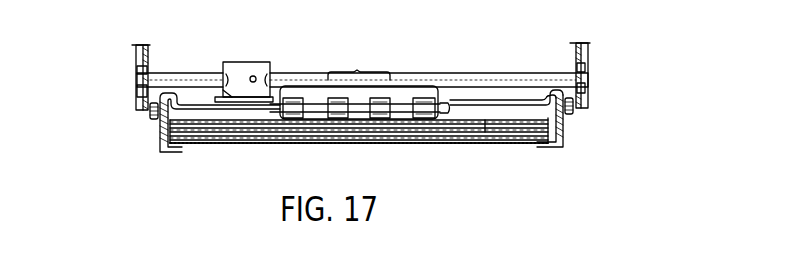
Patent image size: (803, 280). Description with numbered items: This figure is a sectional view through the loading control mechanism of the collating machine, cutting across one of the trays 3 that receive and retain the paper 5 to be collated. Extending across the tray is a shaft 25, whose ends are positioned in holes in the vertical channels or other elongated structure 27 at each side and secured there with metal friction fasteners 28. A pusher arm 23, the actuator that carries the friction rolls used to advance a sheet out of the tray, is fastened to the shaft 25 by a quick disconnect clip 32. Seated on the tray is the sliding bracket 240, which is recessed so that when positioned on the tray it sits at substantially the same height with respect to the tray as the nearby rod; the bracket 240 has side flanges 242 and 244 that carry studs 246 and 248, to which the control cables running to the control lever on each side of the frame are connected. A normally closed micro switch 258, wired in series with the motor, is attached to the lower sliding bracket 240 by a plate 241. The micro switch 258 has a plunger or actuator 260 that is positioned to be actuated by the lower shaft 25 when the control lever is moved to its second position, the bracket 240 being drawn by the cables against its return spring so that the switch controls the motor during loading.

The tray 3 is at (257, 143).
The paper 5 is at (487, 132).
The pusher arm 23 is at (413, 83).
The shaft 25 is at (537, 78).
The vertical channel 27 is at (142, 52).
The metal friction fastener 28 is at (138, 71).
The quick disconnect clip 32 is at (345, 70).
The sliding bracket 240 is at (476, 104).
The plate 241 is at (232, 96).
The side flange 242 is at (160, 132).
The side flange 244 is at (563, 135).
The stud 246 is at (149, 108).
The stud 248 is at (575, 107).
The micro switch 258 is at (240, 72).
The plunger 260 is at (255, 76).